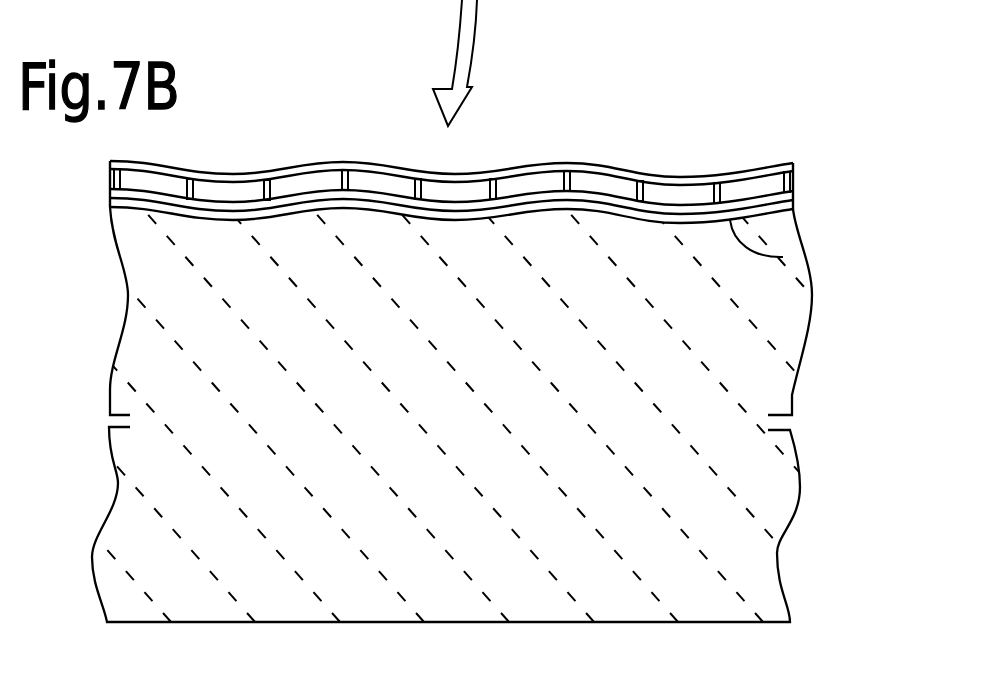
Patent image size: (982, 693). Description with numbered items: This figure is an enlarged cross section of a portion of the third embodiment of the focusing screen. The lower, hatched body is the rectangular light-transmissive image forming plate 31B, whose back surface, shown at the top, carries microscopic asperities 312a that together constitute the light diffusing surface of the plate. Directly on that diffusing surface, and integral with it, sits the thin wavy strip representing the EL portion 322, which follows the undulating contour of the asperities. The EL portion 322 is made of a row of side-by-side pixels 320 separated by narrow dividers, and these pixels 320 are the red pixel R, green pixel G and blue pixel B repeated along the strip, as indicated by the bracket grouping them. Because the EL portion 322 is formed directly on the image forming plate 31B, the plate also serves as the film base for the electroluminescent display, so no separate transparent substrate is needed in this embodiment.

The pixels 320 is at (755, 86).
The red pixel R is at (603, 188).
The green pixel G is at (678, 198).
The blue pixel B is at (747, 196).
The EL portion 322 is at (800, 168).
The microscopic asperities 312a is at (780, 257).
The image forming plate 31B is at (718, 408).